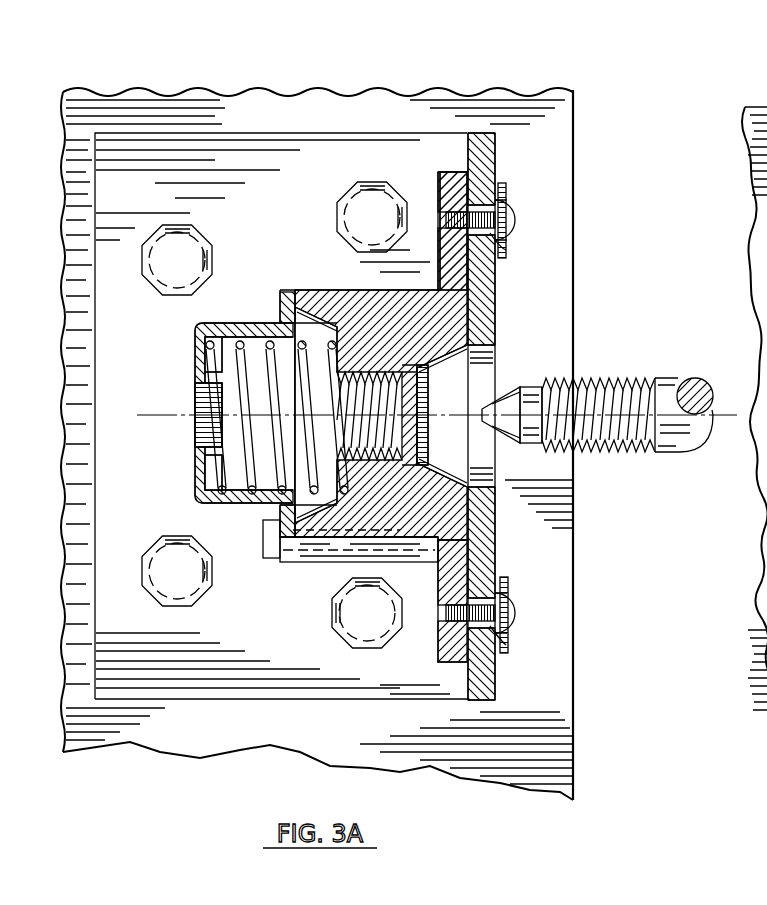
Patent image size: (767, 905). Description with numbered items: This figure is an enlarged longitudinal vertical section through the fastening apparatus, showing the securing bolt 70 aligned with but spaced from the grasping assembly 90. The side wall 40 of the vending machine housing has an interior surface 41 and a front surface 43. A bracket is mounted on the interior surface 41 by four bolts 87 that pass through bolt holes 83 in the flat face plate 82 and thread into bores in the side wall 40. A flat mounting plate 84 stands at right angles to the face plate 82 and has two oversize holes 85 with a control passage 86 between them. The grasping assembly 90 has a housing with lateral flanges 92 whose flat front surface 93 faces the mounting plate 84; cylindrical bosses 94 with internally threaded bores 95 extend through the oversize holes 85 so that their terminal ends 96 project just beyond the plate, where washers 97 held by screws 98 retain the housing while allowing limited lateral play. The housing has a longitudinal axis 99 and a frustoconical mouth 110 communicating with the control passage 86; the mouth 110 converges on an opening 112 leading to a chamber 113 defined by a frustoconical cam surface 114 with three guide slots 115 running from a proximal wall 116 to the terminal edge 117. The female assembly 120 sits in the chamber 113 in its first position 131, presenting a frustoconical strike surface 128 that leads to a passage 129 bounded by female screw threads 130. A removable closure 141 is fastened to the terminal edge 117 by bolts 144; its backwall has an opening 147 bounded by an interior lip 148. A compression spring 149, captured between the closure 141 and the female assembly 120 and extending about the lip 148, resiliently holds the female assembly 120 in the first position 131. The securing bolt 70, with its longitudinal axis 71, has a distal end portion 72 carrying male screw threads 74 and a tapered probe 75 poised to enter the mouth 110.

The side wall 40 is at (248, 88).
The interior surface 41 is at (298, 112).
The front surface 43 is at (575, 225).
The securing bolt 70 is at (690, 452).
The longitudinal axis 71 is at (718, 405).
The distal end portion 72 is at (660, 455).
The male screw threads 74 is at (615, 455).
The tapered probe 75 is at (514, 386).
The face plate 82 is at (158, 132).
The bolt holes 83 is at (200, 236).
The mounting plate 84 is at (497, 142).
The oversize holes 85 is at (515, 210).
The control passage 86 is at (495, 350).
The bolts 87 is at (170, 226).
The grasping assembly 90 is at (332, 288).
The flanges 92 is at (440, 200).
The front surface 93 is at (492, 293).
The bosses 94 is at (510, 240).
The screw threaded bores 95 is at (506, 220).
The terminal ends 96 is at (508, 228).
The washers 97 is at (503, 190).
The screws 98 is at (508, 215).
The longitudinal axis 99 is at (152, 420).
The mouth 110 is at (480, 362).
The opening 112 is at (425, 455).
The chamber 113 is at (362, 540).
The cam surface 114 is at (304, 342).
The guide slots 115 is at (335, 320).
The proximal wall 116 is at (435, 545).
The terminal edge 117 is at (284, 322).
The female assembly 120 is at (263, 541).
The strike surface 128 is at (410, 425).
The passage 129 is at (405, 408).
The female screw threads 130 is at (420, 370).
The first position 131 is at (292, 500).
The removable closure 141 is at (200, 325).
The bolts 144 is at (271, 558).
The opening 147 is at (205, 400).
The interior lip 148 is at (222, 370).
The compression spring 149 is at (212, 482).